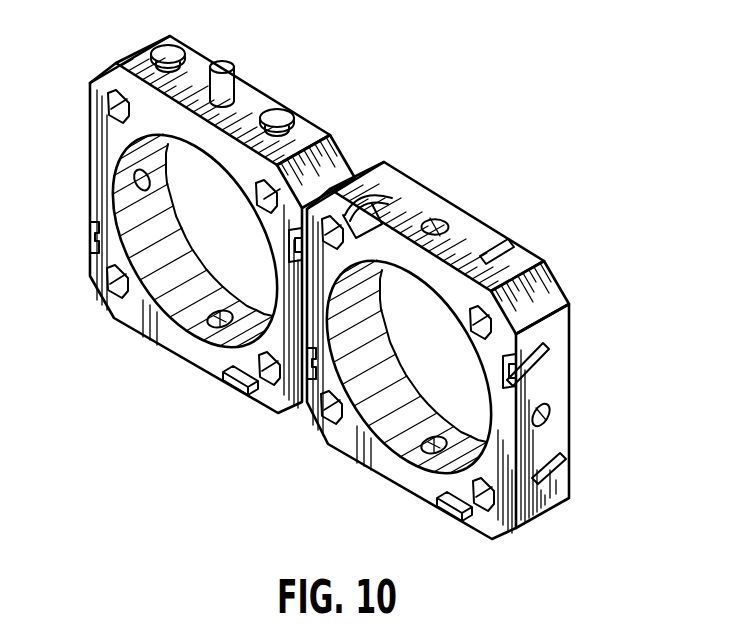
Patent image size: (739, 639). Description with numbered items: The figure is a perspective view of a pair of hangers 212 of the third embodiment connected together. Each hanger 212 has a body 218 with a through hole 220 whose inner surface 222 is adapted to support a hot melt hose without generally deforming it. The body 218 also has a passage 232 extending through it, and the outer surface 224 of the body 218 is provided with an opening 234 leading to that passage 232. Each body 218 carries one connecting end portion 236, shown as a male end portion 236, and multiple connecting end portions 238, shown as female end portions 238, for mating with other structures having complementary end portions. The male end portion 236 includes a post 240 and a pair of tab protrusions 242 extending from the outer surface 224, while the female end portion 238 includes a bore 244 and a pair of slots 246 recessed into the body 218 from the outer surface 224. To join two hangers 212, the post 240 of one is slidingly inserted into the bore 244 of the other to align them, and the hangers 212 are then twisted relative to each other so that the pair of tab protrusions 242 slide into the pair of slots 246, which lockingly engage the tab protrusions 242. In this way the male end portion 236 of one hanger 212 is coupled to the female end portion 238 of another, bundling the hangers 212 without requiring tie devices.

The hanger 212 is at (312, 38).
The body 218 is at (124, 60).
The through hole 220 is at (152, 318).
The inner surface 222 is at (178, 310).
The outer surface 224 is at (97, 176).
The passage 232 is at (110, 104).
The opening 234 is at (108, 96).
The connecting end portion (male end portion) 236 is at (258, 58).
The connecting end portion (female end portion) 238 is at (75, 193).
The post 240 is at (222, 61).
The tab protrusion 242 is at (167, 45).
The bore 244 is at (150, 180).
The slot 246 is at (89, 237).